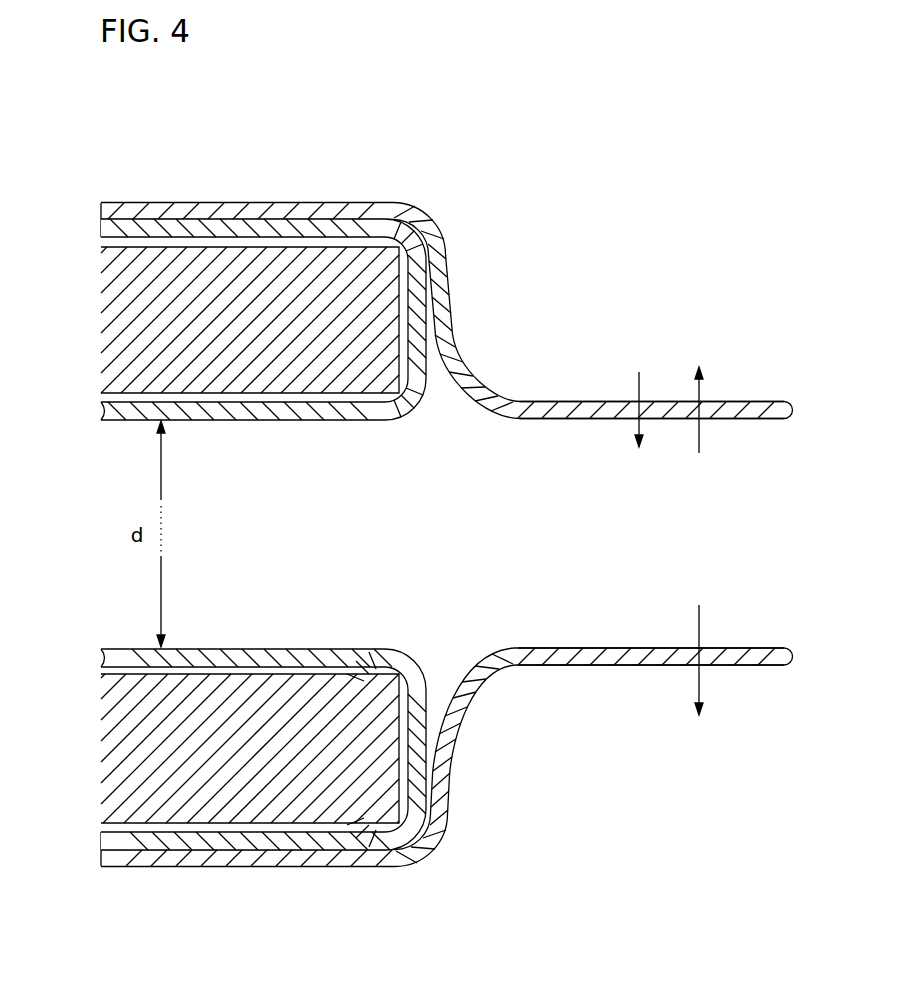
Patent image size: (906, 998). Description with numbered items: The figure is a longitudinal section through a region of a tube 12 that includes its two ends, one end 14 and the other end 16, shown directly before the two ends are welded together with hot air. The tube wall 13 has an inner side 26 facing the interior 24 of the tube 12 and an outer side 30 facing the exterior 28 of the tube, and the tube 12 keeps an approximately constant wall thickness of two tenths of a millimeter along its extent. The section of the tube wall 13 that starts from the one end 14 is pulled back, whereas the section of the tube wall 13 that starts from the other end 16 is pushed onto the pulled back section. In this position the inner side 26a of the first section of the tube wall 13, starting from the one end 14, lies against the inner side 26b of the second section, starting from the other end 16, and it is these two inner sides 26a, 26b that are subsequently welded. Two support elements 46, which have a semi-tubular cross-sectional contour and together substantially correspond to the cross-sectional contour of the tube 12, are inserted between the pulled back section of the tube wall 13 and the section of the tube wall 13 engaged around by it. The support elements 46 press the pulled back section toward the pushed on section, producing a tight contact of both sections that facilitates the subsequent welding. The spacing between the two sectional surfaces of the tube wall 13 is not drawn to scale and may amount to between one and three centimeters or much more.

The tube 12 is at (543, 402).
The tube wall 13 is at (573, 418).
The one end of the tube 14 is at (101, 228).
The other end of the tube 16 is at (101, 211).
The interior of the tube 24 is at (640, 397).
The inner side of the tube wall 26 is at (503, 420).
The inner side of the first section of the tube wall 26a is at (197, 225).
The inner side of the second section of the tube wall 26b is at (298, 218).
The exterior of the tube 28 is at (698, 541).
The outer side of the tube wall 30 is at (590, 402).
The support elements 46 is at (105, 343).